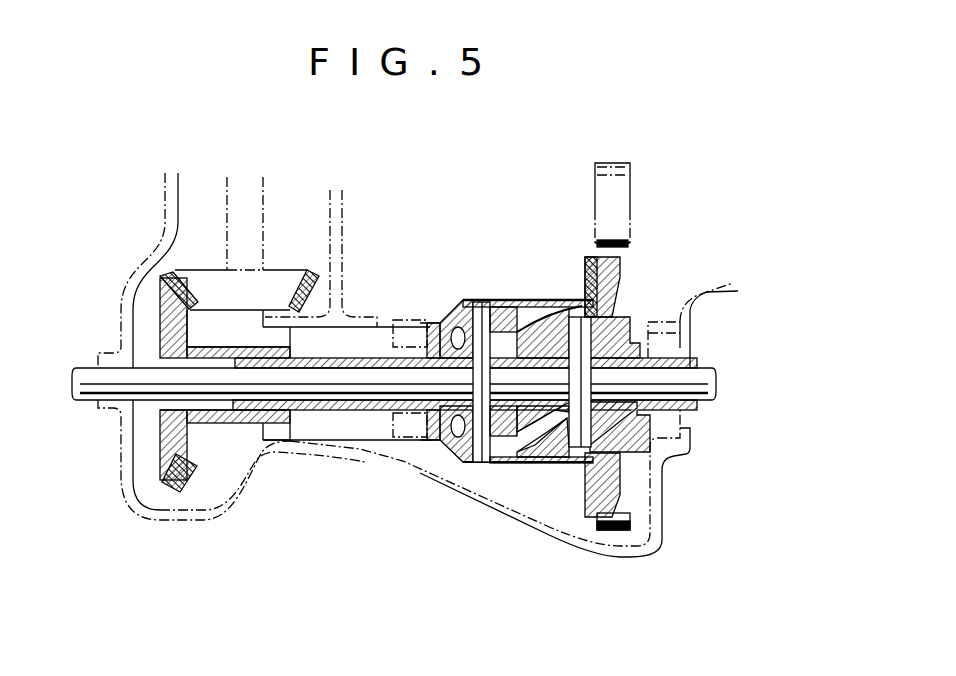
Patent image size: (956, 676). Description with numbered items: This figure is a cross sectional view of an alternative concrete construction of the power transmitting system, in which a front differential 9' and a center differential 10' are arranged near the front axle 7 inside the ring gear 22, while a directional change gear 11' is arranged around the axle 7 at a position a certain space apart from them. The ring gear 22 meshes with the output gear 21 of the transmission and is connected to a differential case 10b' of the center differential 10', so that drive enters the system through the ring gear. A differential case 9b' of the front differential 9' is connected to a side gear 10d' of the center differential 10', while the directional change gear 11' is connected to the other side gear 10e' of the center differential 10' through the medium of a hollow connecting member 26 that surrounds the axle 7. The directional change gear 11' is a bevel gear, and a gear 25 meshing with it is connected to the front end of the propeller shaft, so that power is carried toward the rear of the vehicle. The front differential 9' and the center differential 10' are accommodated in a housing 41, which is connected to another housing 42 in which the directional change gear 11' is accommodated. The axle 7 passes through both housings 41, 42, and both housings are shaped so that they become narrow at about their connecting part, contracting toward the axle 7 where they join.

The front axle 7 is at (80, 402).
The gear 25 is at (312, 275).
The hollow connecting member 26 is at (330, 412).
The directional change gear 11' is at (227, 485).
The housing 42 is at (157, 522).
The housing 41 is at (645, 553).
The side gear 10e' is at (430, 353).
The center differential 10' is at (490, 409).
The differential case 10b' is at (492, 344).
The side gear 10d' is at (504, 487).
The differential case 9b' is at (528, 352).
The front differential 9' is at (596, 417).
The ring gear 22 is at (622, 268).
The output gear 21 is at (594, 195).